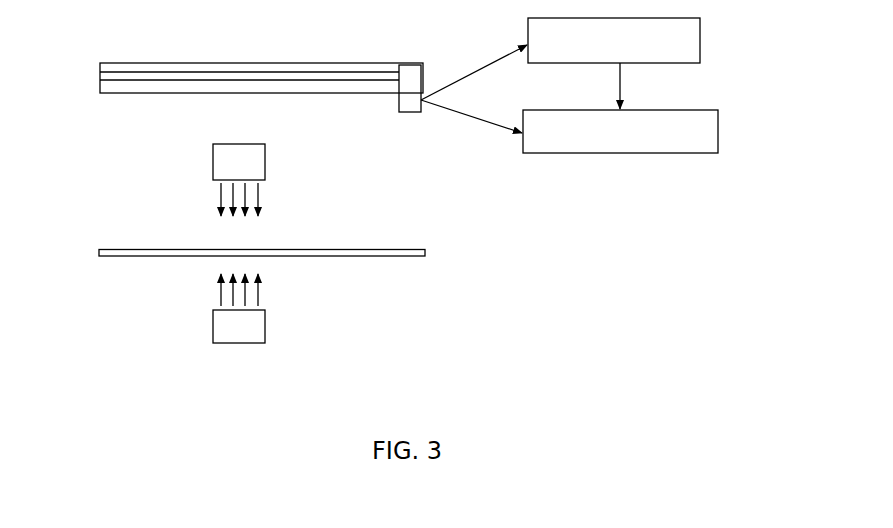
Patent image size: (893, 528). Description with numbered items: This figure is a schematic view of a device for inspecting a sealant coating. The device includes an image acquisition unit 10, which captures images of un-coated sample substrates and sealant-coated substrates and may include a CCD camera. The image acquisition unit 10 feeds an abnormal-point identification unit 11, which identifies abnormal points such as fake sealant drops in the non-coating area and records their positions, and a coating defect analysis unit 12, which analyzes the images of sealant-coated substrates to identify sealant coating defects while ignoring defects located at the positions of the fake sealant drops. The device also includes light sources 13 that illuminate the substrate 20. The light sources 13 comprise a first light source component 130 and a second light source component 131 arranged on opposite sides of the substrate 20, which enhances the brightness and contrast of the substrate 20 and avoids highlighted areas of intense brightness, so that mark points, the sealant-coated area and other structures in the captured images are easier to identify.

The image acquisition unit 10 is at (410, 78).
The abnormal-point identification unit 11 is at (700, 44).
The coating defect analysis unit 12 is at (718, 135).
The light sources 13 is at (150, 243).
The first light source component 130 is at (236, 160).
The second light source component 131 is at (226, 328).
The substrate 20 is at (353, 250).